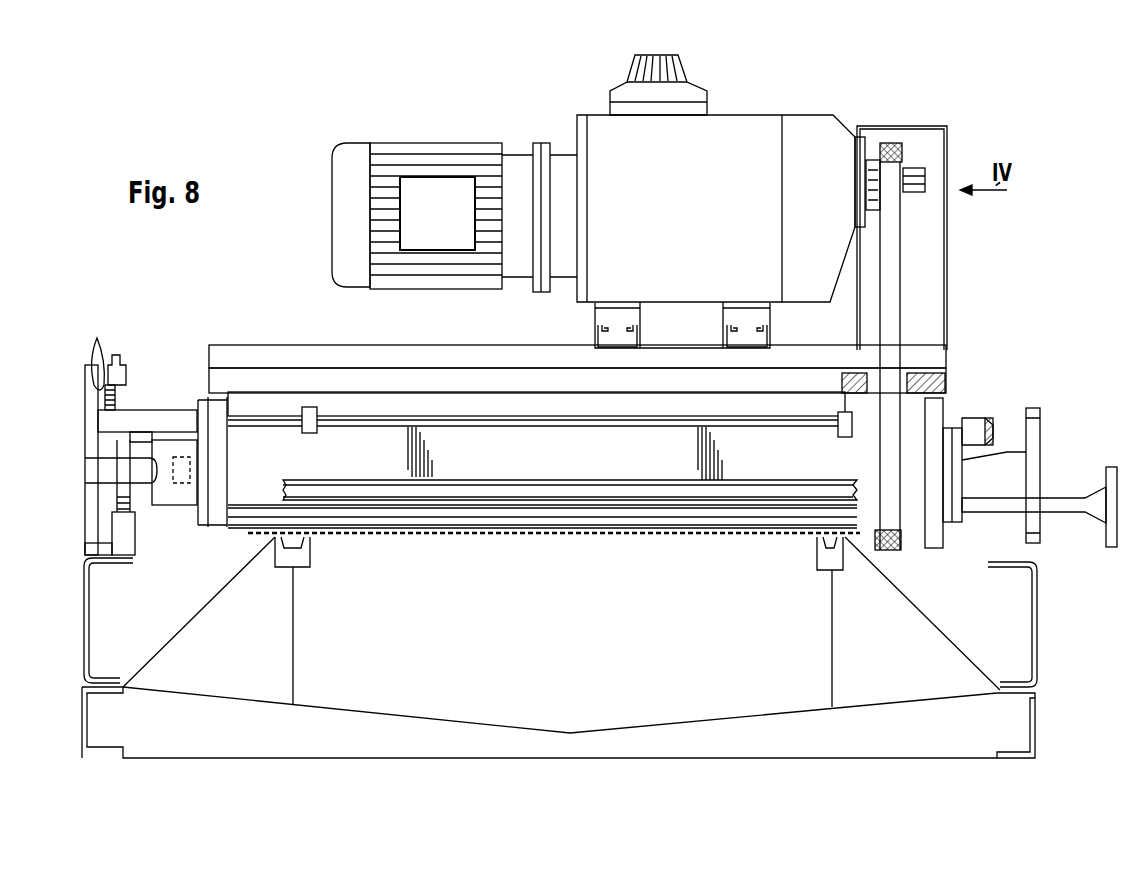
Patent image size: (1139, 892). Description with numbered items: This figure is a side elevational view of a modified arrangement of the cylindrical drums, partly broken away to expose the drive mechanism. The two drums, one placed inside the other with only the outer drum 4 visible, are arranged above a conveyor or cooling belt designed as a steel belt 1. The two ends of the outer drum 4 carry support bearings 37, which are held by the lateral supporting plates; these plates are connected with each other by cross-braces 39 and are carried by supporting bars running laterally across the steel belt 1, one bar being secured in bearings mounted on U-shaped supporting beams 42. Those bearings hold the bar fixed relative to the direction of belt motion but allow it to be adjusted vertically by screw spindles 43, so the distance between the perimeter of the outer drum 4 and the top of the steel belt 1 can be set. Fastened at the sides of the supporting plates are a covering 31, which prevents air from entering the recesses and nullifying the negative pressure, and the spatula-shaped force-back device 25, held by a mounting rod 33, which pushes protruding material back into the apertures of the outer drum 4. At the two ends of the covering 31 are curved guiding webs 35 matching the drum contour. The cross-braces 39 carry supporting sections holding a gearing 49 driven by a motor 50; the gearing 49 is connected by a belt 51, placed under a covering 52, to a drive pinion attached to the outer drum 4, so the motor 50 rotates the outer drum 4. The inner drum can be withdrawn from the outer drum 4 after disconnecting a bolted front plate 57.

The steel belt 1 is at (545, 535).
The outer drum 4 is at (378, 505).
The force-back device 25 is at (767, 457).
The covering 31 is at (447, 418).
The mounting rod 33 is at (815, 493).
The curved guiding webs 35 is at (308, 407).
The support bearings 37 is at (217, 508).
The cross-braces 39 is at (370, 368).
The U-shaped supporting beams 42 is at (88, 620).
The screw spindles 43 is at (118, 396).
The gearing 49 is at (752, 148).
The motor 50 is at (470, 178).
The belt 51 is at (890, 268).
The covering 52 is at (947, 130).
The bolted front plate 57 is at (193, 490).